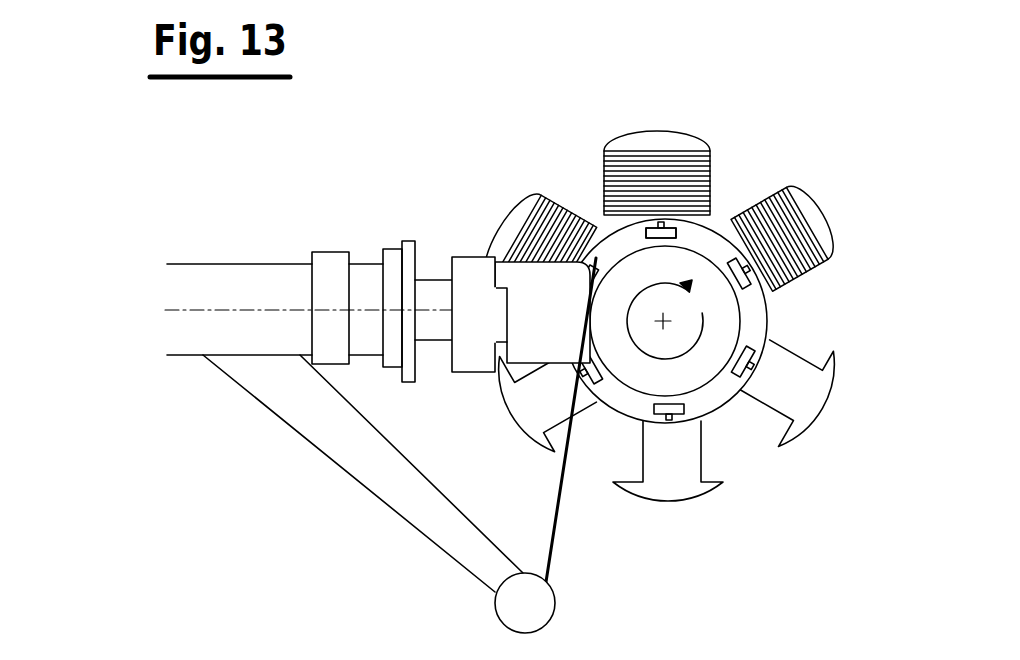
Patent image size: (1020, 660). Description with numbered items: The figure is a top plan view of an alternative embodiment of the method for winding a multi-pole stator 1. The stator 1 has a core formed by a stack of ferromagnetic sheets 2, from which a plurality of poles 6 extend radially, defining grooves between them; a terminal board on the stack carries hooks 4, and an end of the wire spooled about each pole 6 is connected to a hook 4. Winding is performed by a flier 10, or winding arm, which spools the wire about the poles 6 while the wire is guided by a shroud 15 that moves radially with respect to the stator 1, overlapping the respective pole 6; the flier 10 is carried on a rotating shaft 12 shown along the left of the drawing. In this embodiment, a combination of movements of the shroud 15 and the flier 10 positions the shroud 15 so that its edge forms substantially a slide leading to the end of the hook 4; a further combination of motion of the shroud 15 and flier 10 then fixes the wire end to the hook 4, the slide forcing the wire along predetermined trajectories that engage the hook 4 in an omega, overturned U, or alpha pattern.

The multi-pole stator 1 is at (793, 77).
The stack of ferromagnetic sheets 2 is at (808, 292).
The hook 4 is at (678, 229).
The pole 6 is at (817, 423).
The flier 10 is at (393, 488).
The shaft 12 is at (157, 312).
The shroud 15 is at (471, 217).